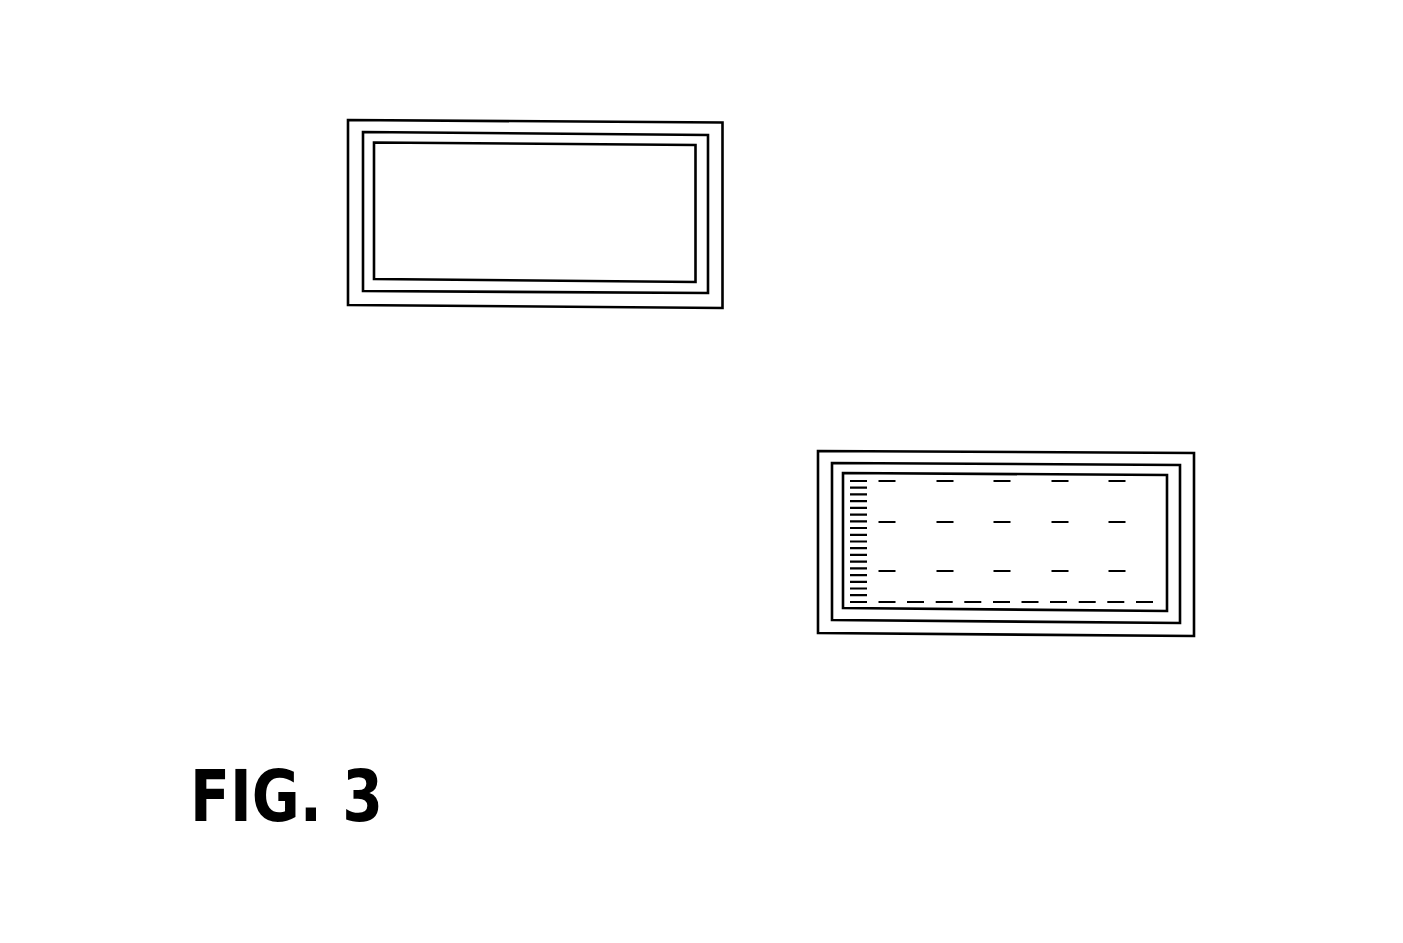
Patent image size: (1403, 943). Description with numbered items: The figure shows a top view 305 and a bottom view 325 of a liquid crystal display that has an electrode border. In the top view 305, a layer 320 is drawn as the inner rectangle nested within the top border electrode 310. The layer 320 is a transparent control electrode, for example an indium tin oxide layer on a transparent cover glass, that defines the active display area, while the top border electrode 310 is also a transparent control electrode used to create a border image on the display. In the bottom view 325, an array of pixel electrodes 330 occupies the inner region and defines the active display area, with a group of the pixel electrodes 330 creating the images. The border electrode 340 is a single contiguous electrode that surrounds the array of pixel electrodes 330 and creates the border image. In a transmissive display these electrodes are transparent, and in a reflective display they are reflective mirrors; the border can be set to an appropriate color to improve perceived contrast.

The top view 305 is at (477, 309).
The top border electrode 310 is at (390, 119).
The layer 320 is at (675, 225).
The bottom view 325 is at (1063, 443).
The pixel electrodes 330 is at (865, 601).
The border electrode 340 is at (1193, 485).